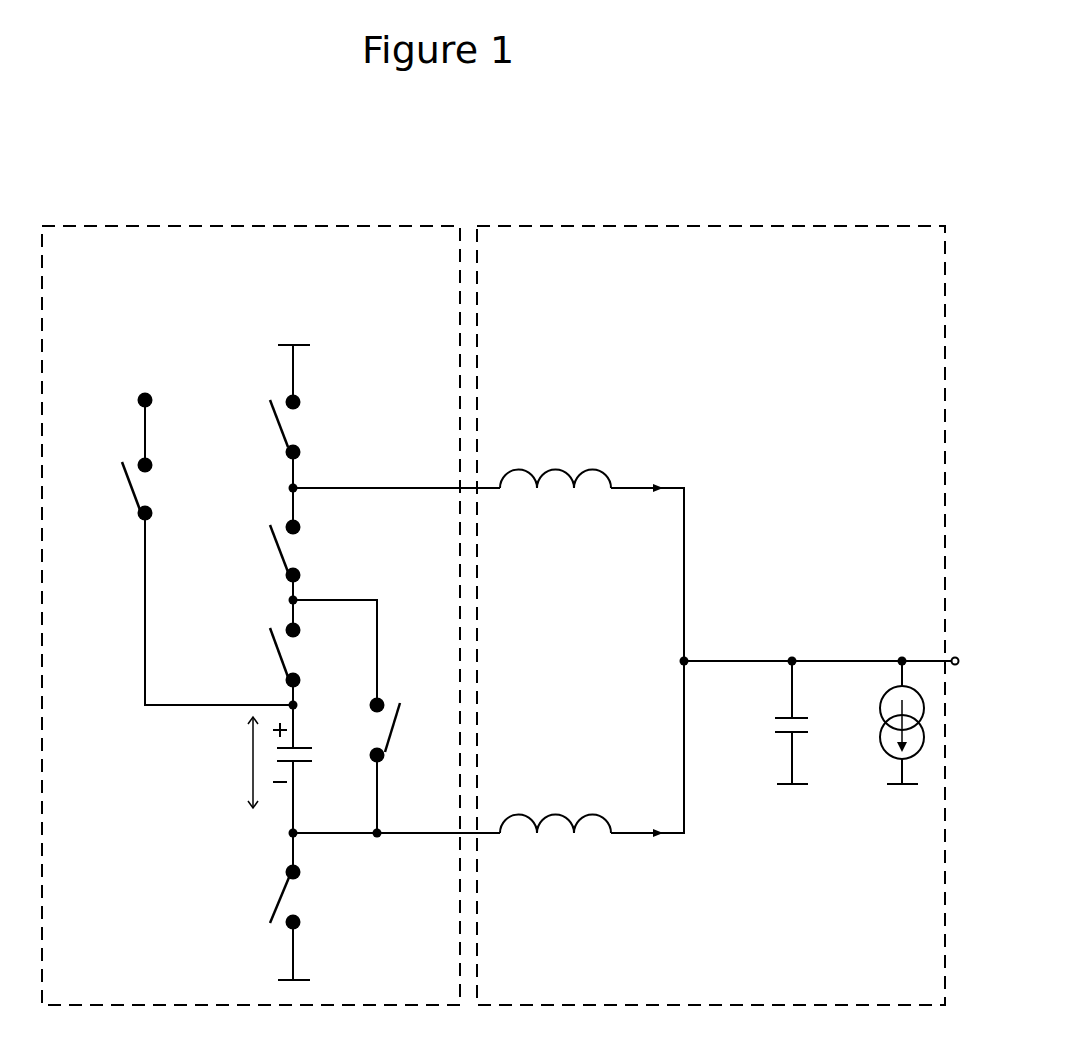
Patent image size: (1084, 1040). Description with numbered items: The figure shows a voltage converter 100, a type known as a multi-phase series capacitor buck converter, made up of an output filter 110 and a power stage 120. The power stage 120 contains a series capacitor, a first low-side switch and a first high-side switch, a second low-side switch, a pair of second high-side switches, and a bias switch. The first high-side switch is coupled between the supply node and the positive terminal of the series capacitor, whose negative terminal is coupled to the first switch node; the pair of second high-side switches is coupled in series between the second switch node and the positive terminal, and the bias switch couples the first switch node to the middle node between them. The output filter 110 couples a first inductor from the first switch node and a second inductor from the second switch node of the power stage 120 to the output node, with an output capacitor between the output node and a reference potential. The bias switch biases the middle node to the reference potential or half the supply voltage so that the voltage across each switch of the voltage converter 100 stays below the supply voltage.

The voltage converter 100 is at (738, 118).
The output filter 110 is at (694, 260).
The power stage 120 is at (234, 260).